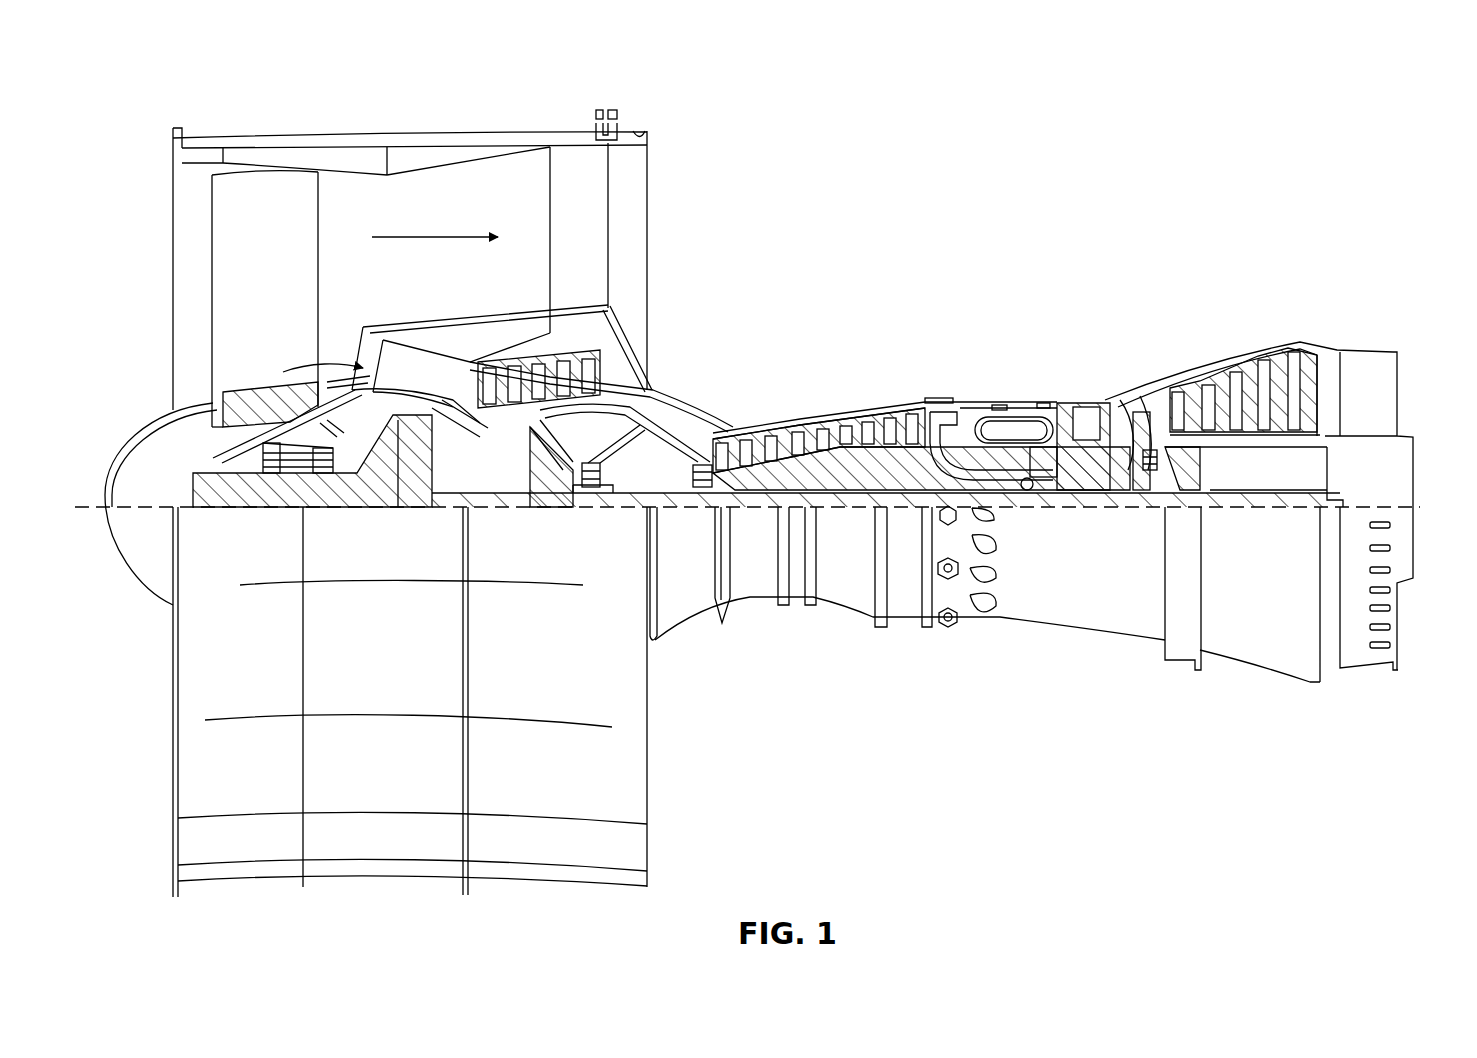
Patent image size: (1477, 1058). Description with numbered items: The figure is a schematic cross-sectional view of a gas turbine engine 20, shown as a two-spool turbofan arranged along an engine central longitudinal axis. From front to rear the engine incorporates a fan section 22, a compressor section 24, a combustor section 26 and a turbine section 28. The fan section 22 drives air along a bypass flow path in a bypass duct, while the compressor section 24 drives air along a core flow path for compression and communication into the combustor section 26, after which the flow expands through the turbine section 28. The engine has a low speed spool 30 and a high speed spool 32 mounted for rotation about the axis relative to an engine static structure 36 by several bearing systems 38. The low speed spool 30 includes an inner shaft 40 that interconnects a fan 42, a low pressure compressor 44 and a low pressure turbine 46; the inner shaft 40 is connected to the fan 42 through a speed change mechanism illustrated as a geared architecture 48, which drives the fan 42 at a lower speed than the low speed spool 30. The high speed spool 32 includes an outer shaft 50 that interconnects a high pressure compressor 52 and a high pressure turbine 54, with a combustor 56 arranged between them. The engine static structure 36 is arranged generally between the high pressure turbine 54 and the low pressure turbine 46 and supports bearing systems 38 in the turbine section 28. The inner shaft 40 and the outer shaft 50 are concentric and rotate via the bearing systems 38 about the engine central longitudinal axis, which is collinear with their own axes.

The gas turbine engine 20 is at (1220, 178).
The fan section 22 is at (280, 132).
The compressor section 24 is at (838, 364).
The combustor section 26 is at (1003, 364).
The turbine section 28 is at (1150, 345).
The low speed spool 30 is at (866, 513).
The high speed spool 32 is at (925, 452).
The engine static structure 36 is at (906, 627).
The bearing systems 38 is at (283, 473).
The inner shaft 40 is at (660, 500).
The fan 42 is at (292, 267).
The low pressure compressor 44 is at (562, 383).
The low pressure turbine 46 is at (1253, 368).
The geared architecture 48 is at (415, 472).
The outer shaft 50 is at (1030, 493).
The high pressure compressor 52 is at (826, 473).
The high pressure turbine 54 is at (1085, 403).
The combustor 56 is at (1010, 432).